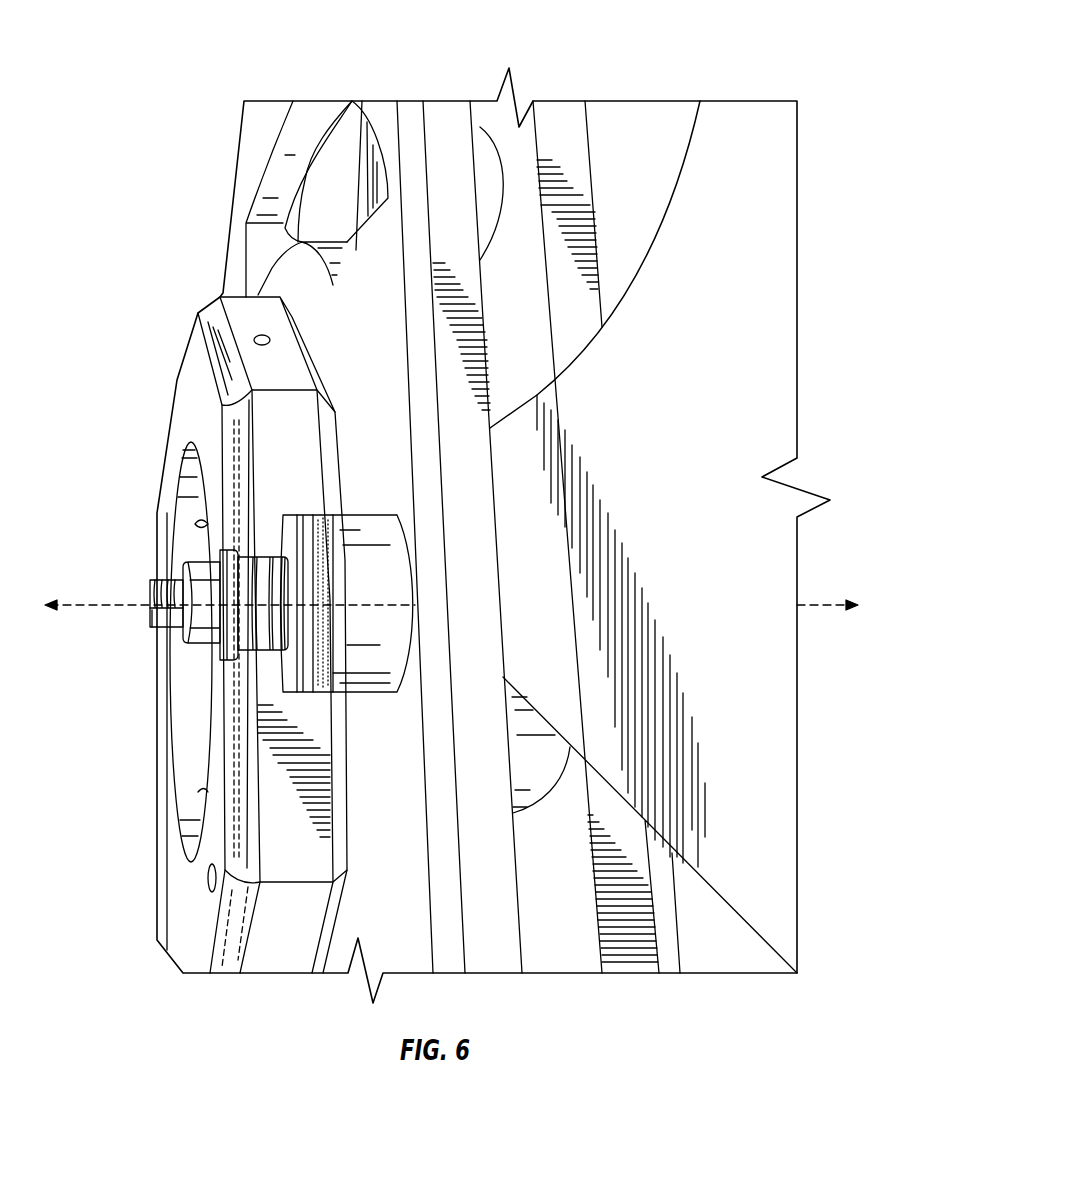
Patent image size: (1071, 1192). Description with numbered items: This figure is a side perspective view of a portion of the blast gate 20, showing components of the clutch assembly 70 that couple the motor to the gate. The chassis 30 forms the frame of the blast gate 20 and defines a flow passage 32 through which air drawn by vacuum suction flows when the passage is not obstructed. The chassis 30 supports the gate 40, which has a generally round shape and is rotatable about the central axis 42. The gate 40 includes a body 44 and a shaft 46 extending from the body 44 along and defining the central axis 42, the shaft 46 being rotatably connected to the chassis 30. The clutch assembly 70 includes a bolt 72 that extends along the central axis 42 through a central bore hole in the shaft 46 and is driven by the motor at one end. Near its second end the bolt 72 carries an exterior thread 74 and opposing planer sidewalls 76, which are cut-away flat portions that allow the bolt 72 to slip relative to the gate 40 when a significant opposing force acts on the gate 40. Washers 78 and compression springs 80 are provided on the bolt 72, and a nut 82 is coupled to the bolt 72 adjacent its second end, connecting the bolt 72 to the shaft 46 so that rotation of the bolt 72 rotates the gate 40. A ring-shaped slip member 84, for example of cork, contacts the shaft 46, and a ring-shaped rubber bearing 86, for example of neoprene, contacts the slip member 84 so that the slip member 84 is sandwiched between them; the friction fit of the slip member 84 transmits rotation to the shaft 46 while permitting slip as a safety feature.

The blast gate 20 is at (728, 50).
The chassis 30 is at (272, 99).
The gate 40 is at (767, 343).
The body 44 is at (770, 650).
The central axis 42 is at (98, 603).
The flow passage 32 is at (193, 752).
The clutch assembly 70 is at (181, 549).
The bolt 72 is at (139, 576).
The exterior thread 74 is at (155, 582).
The planer sidewalls 76 is at (150, 616).
The nut 82 is at (203, 625).
The washer 78 is at (268, 537).
The spring 80 is at (252, 650).
The slip member 84 is at (263, 655).
The rubber bearing 86 is at (287, 740).
The shaft 46 is at (378, 690).